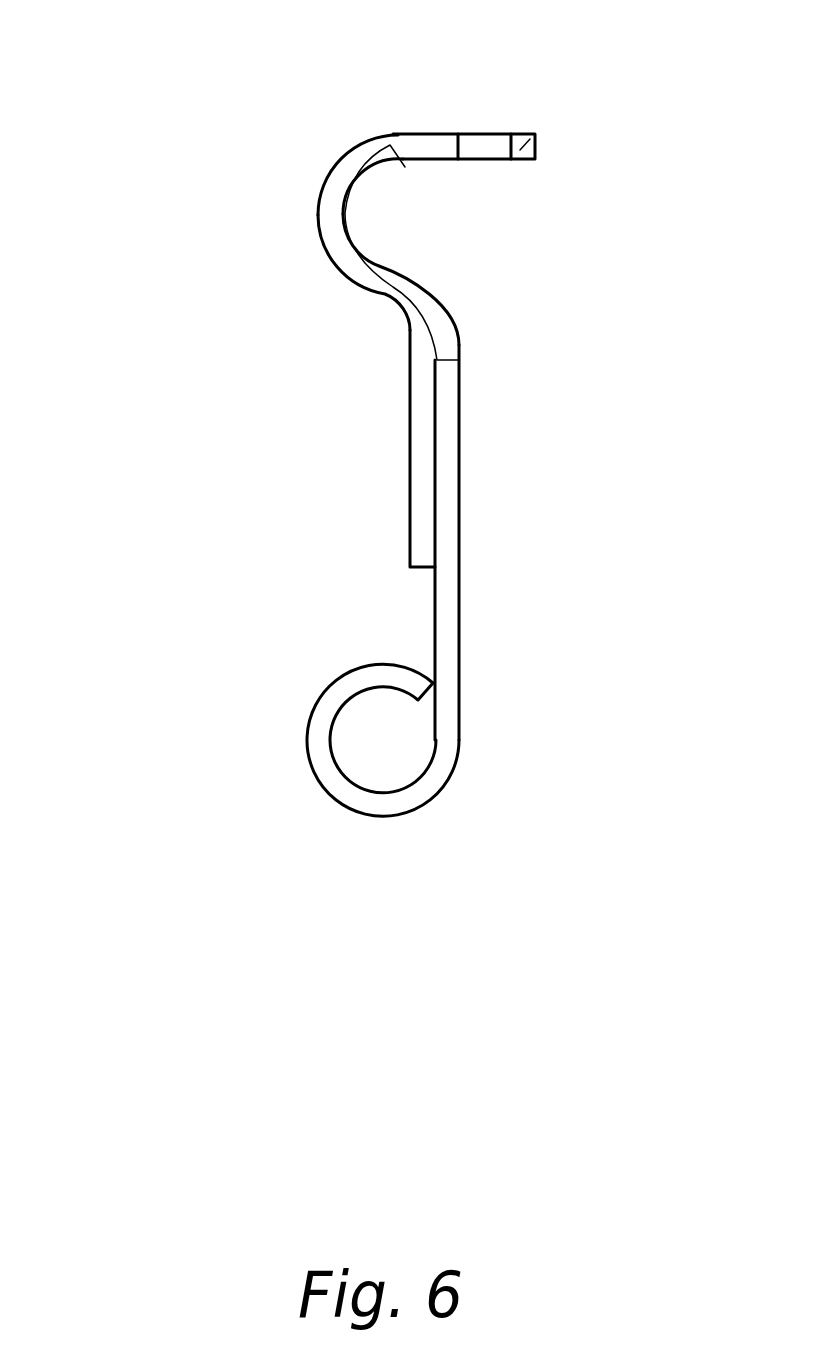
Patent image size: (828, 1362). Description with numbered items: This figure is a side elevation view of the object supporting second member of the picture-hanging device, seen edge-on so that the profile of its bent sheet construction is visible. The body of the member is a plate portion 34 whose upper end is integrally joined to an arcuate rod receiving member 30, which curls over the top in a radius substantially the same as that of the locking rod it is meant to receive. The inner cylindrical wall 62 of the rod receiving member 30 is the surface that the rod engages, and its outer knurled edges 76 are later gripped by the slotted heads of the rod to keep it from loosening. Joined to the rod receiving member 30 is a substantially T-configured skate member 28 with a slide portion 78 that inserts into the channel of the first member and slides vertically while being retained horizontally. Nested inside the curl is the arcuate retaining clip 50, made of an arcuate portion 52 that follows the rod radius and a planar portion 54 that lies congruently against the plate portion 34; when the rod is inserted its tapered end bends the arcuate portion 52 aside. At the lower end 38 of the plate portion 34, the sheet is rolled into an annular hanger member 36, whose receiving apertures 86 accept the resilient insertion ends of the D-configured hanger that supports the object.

The skate member 28 is at (483, 147).
The arcuate rod receiving member 30 is at (425, 147).
The plate portion 34 is at (433, 617).
The annular hanger member 36 is at (307, 770).
The lower end 38 is at (445, 670).
The arcuate retaining clip 50 is at (373, 185).
The arcuate portion 52 is at (372, 213).
The planar portion 54 is at (420, 539).
The inner cylindrical wall 62 is at (340, 170).
The outer knurled edge 76 is at (328, 213).
The slide portion 78 is at (535, 135).
The receiving aperture 86 is at (375, 728).